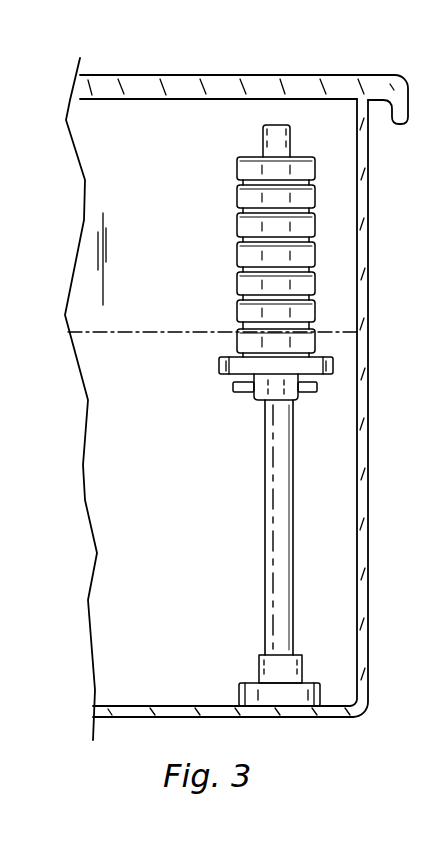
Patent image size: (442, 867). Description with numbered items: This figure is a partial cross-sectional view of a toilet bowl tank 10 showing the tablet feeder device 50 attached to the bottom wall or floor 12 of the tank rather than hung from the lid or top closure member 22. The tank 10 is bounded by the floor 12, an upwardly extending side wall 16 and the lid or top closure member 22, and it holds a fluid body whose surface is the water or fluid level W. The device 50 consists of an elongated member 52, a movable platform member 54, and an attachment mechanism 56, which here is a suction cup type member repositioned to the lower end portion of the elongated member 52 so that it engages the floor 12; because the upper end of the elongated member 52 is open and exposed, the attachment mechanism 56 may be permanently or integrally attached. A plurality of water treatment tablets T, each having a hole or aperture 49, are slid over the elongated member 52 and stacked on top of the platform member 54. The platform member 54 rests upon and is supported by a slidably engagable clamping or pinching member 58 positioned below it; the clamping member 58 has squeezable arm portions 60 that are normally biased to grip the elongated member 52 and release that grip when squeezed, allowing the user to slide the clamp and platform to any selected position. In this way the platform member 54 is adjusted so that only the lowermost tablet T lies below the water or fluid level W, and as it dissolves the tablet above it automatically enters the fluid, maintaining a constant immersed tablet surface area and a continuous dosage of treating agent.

The toilet bowl tank 10 is at (60, 180).
The lid or top closure member 22 is at (228, 75).
The side wall 16 is at (372, 466).
The bottom wall or floor 12 is at (137, 705).
The tablet feeder device 50 is at (231, 241).
The water treatment tablets T is at (237, 231).
The hole or aperture 49 is at (237, 283).
The movable platform member 54 is at (219, 363).
The clamping or pinching member 58 is at (262, 402).
The squeezable arm portions 60 is at (233, 388).
The elongated member 52 is at (265, 525).
The attachment mechanism 56 is at (239, 688).
The water or fluid level W is at (150, 589).